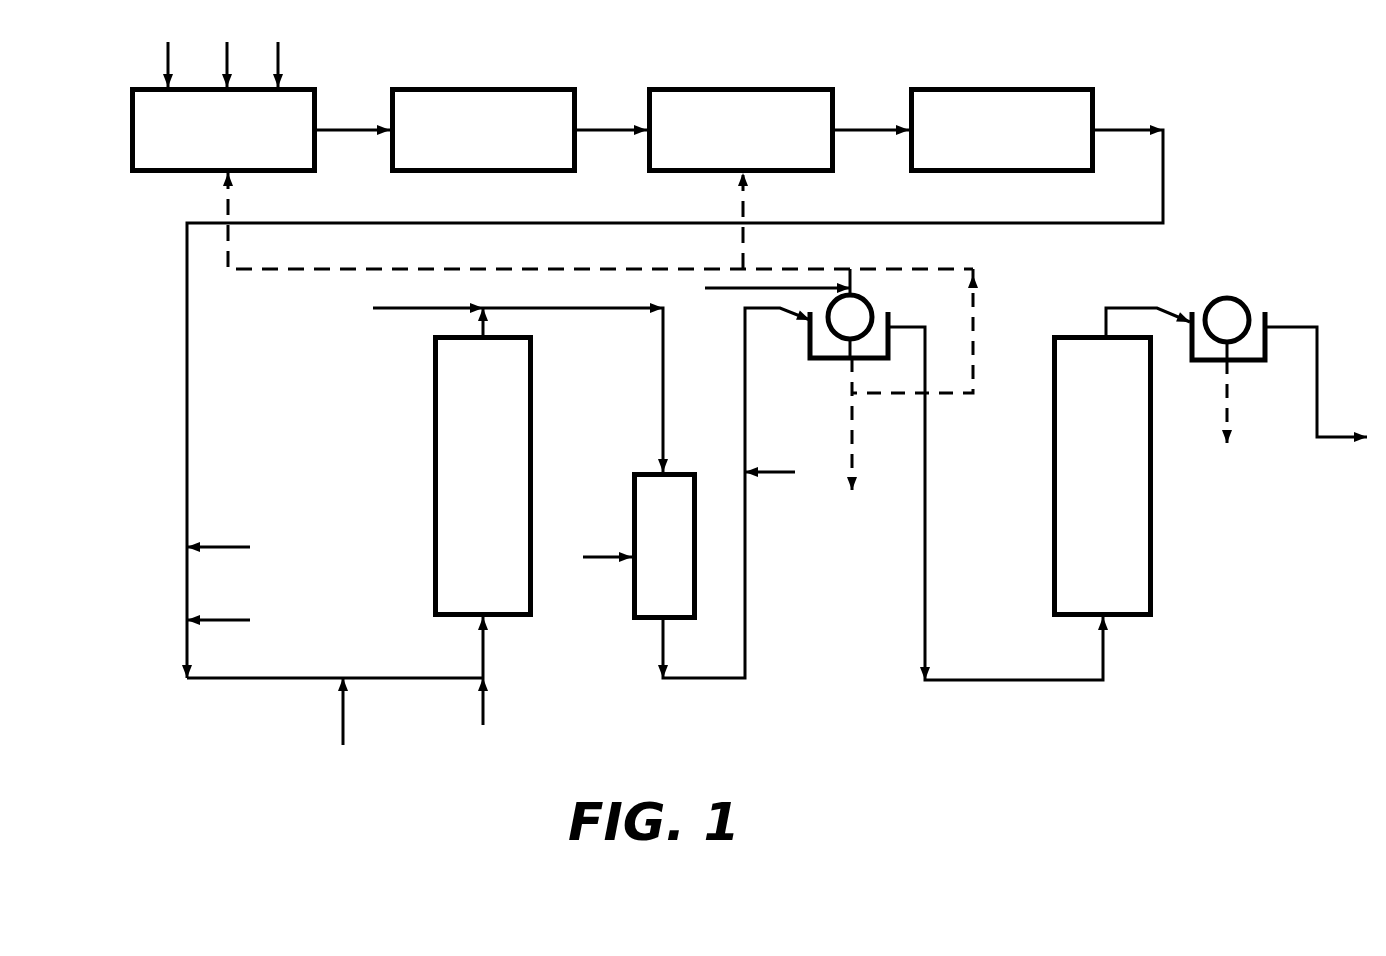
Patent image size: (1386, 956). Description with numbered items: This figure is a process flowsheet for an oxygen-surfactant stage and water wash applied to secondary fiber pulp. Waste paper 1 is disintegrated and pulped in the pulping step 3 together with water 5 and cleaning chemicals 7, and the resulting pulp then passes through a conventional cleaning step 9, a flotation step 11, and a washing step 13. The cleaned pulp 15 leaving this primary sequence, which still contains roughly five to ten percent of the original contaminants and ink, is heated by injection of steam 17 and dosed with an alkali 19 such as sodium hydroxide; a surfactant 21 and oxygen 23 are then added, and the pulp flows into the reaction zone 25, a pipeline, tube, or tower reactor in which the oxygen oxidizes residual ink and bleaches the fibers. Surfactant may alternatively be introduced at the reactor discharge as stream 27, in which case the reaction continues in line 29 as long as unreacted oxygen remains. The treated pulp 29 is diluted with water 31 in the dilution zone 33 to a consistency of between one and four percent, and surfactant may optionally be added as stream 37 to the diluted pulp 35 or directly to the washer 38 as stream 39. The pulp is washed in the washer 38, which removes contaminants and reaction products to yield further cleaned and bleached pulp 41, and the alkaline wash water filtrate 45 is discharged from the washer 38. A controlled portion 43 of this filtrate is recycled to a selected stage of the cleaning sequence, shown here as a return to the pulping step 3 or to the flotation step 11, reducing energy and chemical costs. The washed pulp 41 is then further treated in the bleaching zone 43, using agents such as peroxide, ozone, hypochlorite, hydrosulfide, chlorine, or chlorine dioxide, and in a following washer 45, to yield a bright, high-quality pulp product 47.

The waste paper 1 is at (165, 62).
The pulping step 3 is at (152, 175).
The water 5 is at (224, 62).
The cleaning chemicals 7 is at (275, 62).
The cleaning step 9 is at (478, 87).
The flotation step 11 is at (735, 87).
The washing step 13 is at (1003, 87).
The cleaned pulp 15 is at (1166, 186).
The steam 17 is at (228, 547).
The alkali 19 is at (232, 620).
The surfactant 21 is at (346, 712).
The oxygen 23 is at (484, 700).
The reaction zone 25 is at (483, 476).
The surfactant stream 27 is at (424, 310).
The treated pulp 29 is at (592, 312).
The water 31 is at (612, 556).
The dilution zone 33 is at (665, 546).
The pulp 35 is at (748, 553).
The surfactant stream 37 is at (780, 474).
The washer 38 is at (808, 345).
The surfactant stream 39 is at (714, 290).
The cleaned and bleached pulp 41 is at (928, 530).
The bleaching zone 43 is at (990, 330).
The wash water filtrate 45 is at (848, 378).
The pulp product 47 is at (1320, 412).